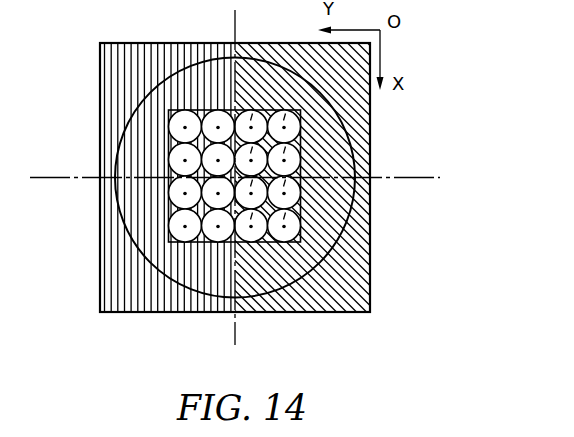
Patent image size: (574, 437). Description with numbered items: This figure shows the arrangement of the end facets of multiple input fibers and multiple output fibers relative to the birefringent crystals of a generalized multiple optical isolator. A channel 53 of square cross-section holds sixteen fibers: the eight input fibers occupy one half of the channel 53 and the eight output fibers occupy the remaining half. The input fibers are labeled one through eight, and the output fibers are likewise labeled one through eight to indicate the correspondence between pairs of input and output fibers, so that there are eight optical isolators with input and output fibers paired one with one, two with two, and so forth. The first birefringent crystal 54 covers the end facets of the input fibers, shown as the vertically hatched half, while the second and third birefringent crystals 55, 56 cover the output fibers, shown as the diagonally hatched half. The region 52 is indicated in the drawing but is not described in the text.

The hole pattern region 52 is at (250, 80).
The channel 53 is at (203, 238).
The first birefringent crystal 54 is at (127, 62).
The second birefringent crystal 55 is at (295, 177).
The third birefringent crystal 56 is at (368, 125).